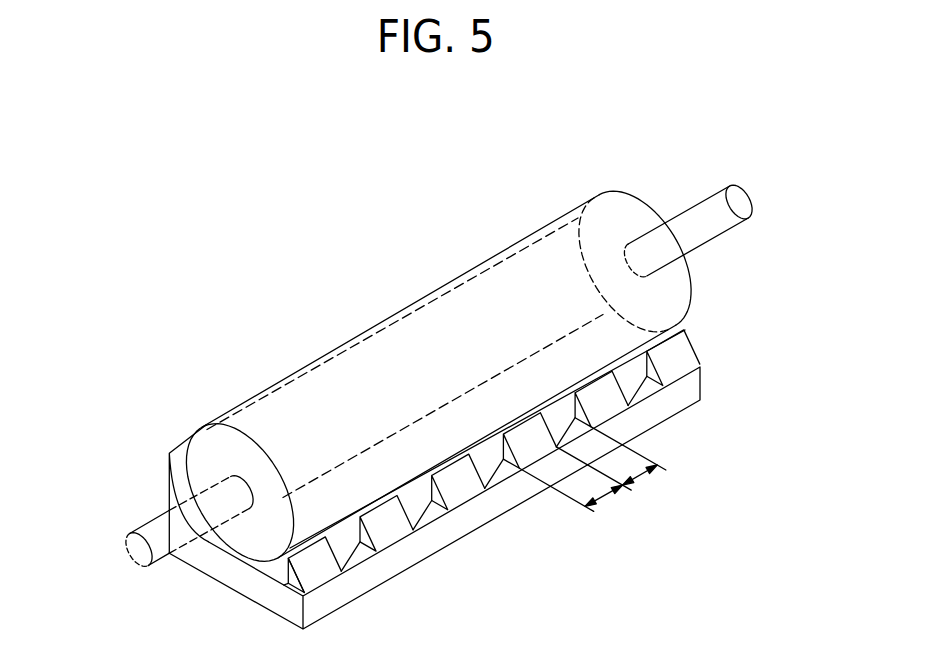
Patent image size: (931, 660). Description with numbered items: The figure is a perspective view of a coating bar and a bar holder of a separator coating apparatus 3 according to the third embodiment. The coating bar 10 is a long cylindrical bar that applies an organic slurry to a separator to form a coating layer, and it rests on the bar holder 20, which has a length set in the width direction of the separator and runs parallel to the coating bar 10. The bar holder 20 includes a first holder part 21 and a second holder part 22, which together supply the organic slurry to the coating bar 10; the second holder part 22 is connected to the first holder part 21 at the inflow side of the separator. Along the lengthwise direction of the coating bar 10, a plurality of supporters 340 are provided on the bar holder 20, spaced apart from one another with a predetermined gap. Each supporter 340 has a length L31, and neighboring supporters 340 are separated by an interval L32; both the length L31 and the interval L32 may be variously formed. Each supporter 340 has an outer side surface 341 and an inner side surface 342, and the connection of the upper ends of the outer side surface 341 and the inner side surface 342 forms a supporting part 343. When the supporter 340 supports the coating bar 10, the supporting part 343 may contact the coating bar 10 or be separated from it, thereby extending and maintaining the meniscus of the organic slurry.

The separator coating apparatus 3 is at (344, 234).
The coating bar 10 is at (641, 195).
The bar holder 20 is at (397, 488).
The first holder part 21 is at (207, 560).
The second holder part 22 is at (169, 478).
The supporter 340 is at (502, 488).
The outer side surface 341 is at (382, 537).
The inner side surface 342 is at (287, 571).
The supporting part 343 is at (303, 537).
The length of supporter L31 is at (581, 489).
The interval between supporters L32 is at (635, 469).